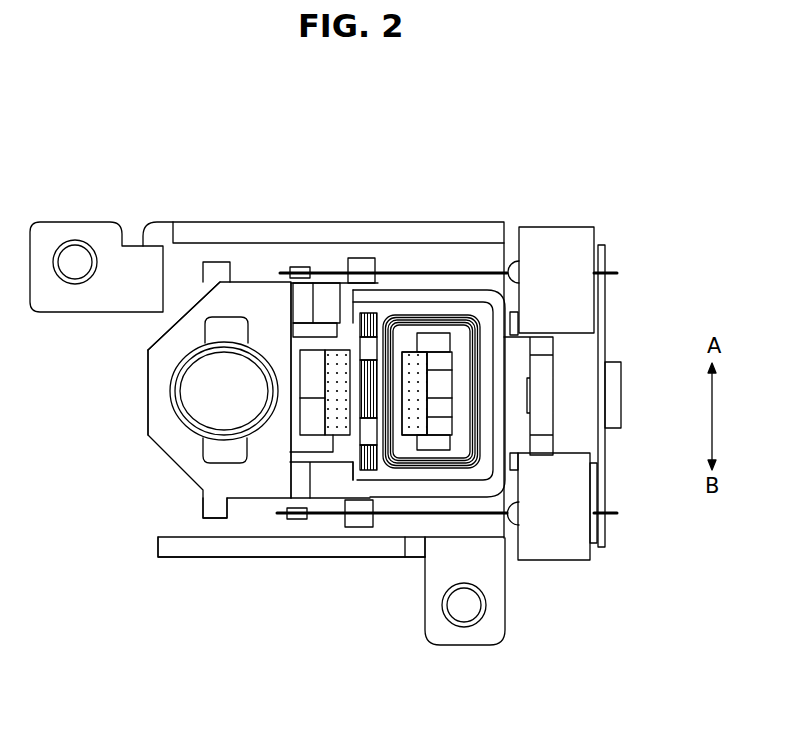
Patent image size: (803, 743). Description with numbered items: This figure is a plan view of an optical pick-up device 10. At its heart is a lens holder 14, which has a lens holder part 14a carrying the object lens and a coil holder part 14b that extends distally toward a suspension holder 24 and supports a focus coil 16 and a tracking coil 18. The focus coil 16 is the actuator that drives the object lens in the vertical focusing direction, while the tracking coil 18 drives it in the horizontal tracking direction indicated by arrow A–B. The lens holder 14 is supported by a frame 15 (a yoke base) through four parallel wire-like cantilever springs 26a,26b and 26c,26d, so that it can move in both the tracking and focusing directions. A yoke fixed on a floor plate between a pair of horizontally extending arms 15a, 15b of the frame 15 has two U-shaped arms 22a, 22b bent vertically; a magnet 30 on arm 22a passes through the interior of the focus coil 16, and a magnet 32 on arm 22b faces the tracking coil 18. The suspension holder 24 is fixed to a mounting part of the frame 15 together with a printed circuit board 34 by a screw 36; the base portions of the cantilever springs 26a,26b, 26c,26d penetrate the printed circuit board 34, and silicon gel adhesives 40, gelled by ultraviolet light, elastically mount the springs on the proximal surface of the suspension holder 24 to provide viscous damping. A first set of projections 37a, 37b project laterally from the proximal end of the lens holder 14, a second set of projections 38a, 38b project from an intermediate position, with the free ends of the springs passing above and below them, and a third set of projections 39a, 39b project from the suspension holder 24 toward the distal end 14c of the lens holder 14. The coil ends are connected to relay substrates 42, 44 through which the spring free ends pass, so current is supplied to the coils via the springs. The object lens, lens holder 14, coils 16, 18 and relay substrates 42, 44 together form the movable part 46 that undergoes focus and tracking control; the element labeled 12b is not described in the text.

The optical pick-up device 10 is at (312, 114).
The cylindrical portion of housing 12b is at (200, 414).
The lens holder 14 is at (243, 279).
The lens holder part 14a is at (264, 298).
The coil holder part 14b is at (413, 300).
The distal end of lens holder 14c is at (160, 345).
The frame 15 is at (250, 218).
The arm of frame 15a is at (158, 557).
The arm of frame 15b is at (318, 283).
The focus coil 16 is at (470, 300).
The tracking coil 18 is at (380, 316).
The arm of yoke 22a is at (443, 353).
The arm of yoke 22b is at (290, 428).
The suspension holder 24 is at (580, 237).
The cantilever springs 26a,26b is at (402, 515).
The cantilever springs 26c,26d is at (452, 290).
The magnet 30 is at (420, 432).
The magnet 32 is at (337, 350).
The printed circuit board 34 is at (605, 246).
The screw 36 is at (622, 393).
The projection of first set 37a is at (210, 520).
The projection of first set 37b is at (203, 262).
The projection of second set 38a is at (360, 528).
The projection of second set 38b is at (364, 262).
The projection of third set 39a is at (518, 468).
The projection of third set 39b is at (520, 322).
The silicon gel adhesive 40 is at (516, 262).
The relay substrate 42 is at (292, 518).
The relay substrate 44 is at (300, 268).
The movable part 46 is at (136, 405).